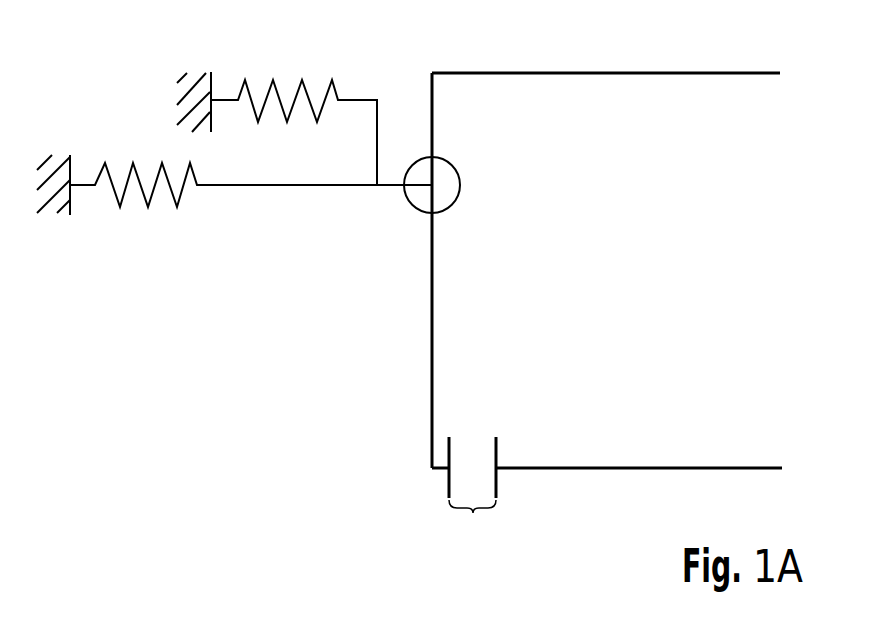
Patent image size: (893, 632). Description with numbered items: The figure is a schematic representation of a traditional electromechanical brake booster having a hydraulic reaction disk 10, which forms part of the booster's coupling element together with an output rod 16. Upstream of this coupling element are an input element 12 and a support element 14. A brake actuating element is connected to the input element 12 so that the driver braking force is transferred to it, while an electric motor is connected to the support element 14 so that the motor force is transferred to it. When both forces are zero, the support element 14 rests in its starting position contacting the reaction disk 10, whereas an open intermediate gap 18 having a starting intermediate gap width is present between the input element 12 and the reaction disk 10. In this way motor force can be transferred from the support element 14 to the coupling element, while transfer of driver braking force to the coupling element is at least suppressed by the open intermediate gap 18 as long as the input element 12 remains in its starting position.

The reaction disk 10 is at (432, 329).
The input element 12 is at (619, 470).
The support element 14 is at (556, 72).
The output rod 16 is at (297, 187).
The intermediate gap 18 is at (486, 412).